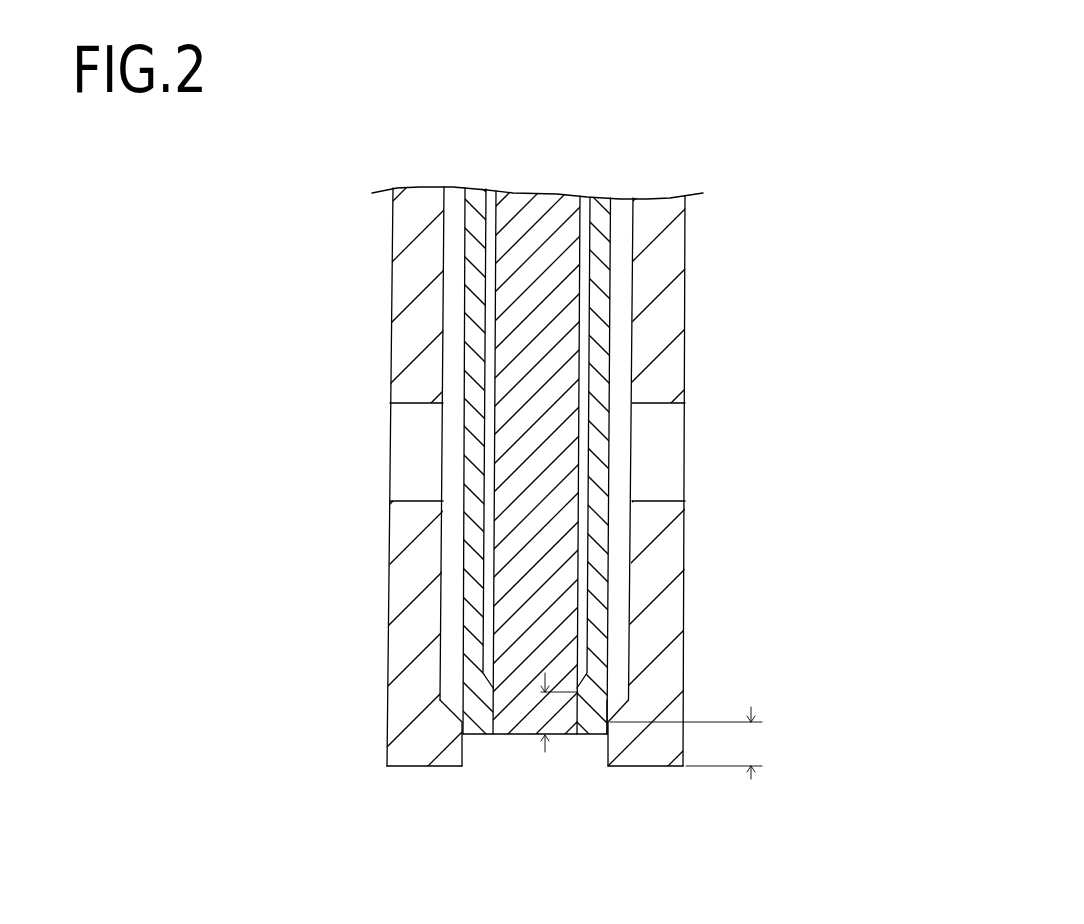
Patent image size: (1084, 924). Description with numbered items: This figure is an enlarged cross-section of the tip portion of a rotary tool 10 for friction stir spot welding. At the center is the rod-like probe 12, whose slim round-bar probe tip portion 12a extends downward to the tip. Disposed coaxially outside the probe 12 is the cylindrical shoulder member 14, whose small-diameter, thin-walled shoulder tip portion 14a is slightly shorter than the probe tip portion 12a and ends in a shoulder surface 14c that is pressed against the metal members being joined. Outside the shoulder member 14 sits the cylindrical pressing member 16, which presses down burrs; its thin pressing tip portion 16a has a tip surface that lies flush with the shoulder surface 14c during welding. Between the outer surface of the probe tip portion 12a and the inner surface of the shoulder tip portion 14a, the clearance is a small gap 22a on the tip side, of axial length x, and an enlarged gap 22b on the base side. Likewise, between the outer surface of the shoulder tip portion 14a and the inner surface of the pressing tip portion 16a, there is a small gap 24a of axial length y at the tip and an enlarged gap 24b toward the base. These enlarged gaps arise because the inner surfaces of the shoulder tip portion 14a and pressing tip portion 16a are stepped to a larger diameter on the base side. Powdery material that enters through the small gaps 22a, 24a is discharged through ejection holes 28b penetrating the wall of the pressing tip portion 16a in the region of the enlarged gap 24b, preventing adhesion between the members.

The rotary tool 10 is at (752, 143).
The probe 12 is at (555, 191).
The probe tip portion 12a is at (524, 223).
The shoulder member 14 is at (455, 260).
The shoulder tip portion 14a is at (470, 321).
The shoulder surface 14c is at (480, 735).
The pressing member 16 is at (697, 252).
The pressing tip portion 16a is at (665, 365).
The small gap 22a is at (489, 735).
The enlarged gap 22b is at (582, 595).
The small gap 24a is at (604, 735).
The enlarged gap 24b is at (455, 612).
The ejection holes 28b is at (545, 460).